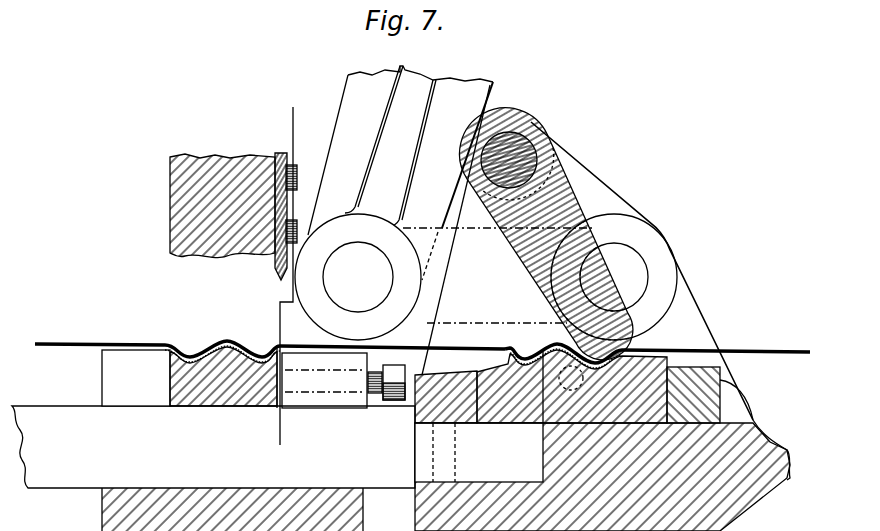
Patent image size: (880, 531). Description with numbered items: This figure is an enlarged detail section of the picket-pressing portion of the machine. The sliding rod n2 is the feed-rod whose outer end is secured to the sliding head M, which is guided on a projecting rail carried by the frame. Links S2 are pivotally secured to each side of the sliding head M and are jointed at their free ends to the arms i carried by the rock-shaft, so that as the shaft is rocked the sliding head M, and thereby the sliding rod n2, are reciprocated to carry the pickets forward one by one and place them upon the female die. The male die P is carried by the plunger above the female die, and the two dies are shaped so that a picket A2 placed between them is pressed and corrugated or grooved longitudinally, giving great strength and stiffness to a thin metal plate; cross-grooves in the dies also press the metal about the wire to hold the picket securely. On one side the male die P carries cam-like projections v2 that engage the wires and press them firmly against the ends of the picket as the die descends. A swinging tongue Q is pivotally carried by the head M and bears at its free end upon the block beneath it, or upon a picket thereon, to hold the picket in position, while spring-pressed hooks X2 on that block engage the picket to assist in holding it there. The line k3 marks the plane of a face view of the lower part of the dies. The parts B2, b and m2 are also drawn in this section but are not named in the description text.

The section line k3 k3 is at (288, 278).
The male die P is at (222, 198).
The cam-like projections v2 is at (272, 275).
The arms i is at (400, 220).
The swinging tongue Q is at (546, 234).
The links S2 is at (433, 256).
The sliding head M is at (606, 264).
The sheet B2 is at (422, 338).
The picket A2 is at (393, 347).
The spring-pressed hooks X2 is at (456, 389).
The die block b is at (223, 376).
The sliding rod n2 is at (213, 440).
The block m2 is at (602, 440).